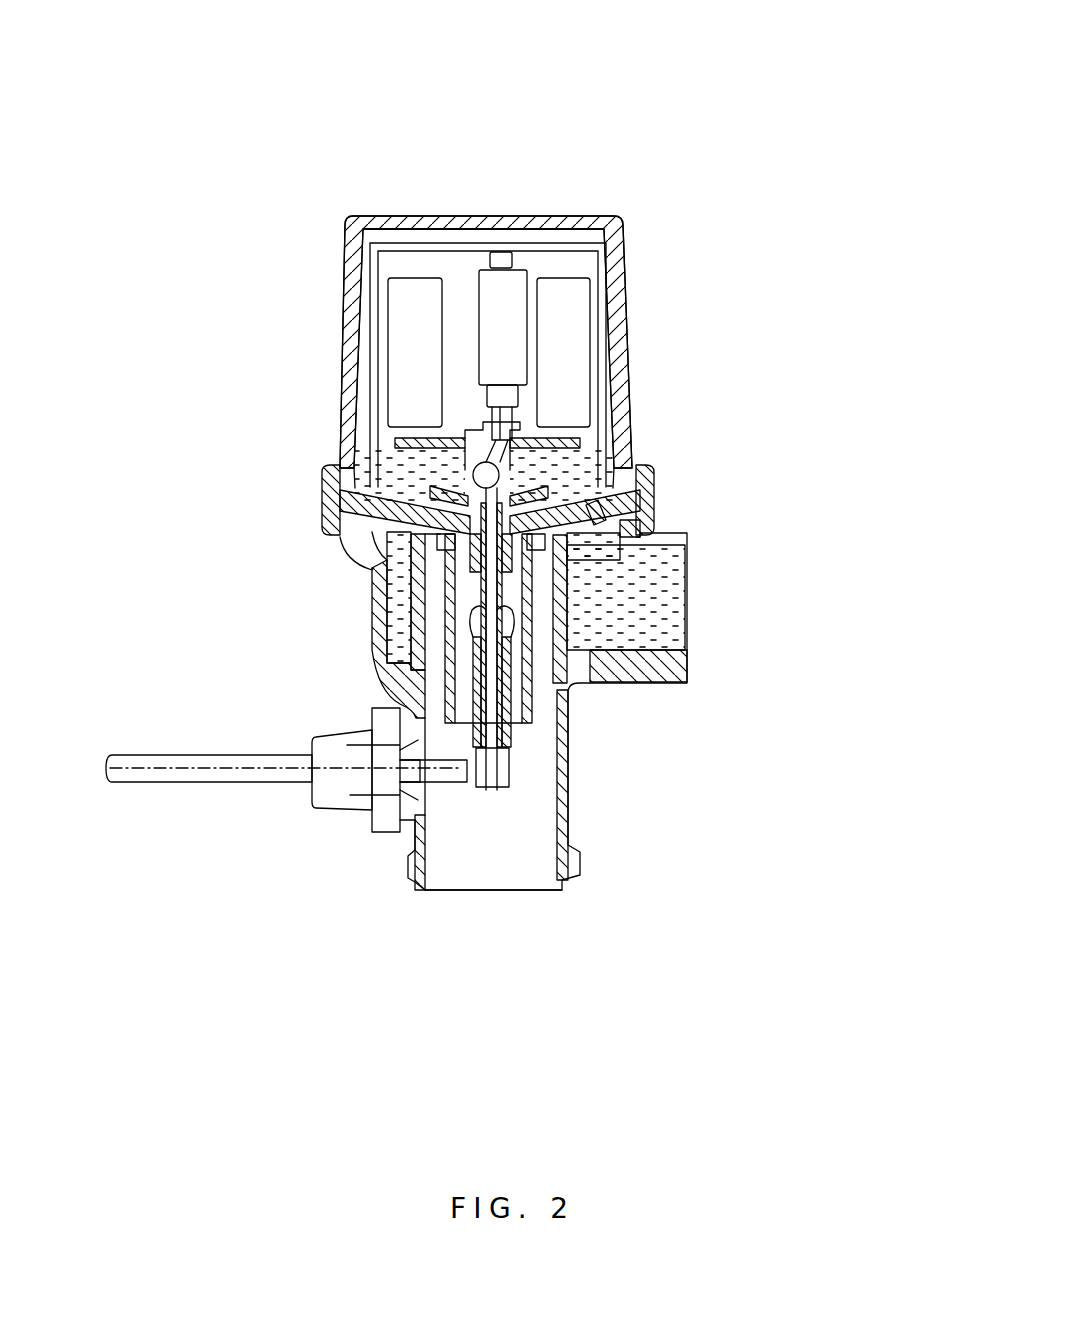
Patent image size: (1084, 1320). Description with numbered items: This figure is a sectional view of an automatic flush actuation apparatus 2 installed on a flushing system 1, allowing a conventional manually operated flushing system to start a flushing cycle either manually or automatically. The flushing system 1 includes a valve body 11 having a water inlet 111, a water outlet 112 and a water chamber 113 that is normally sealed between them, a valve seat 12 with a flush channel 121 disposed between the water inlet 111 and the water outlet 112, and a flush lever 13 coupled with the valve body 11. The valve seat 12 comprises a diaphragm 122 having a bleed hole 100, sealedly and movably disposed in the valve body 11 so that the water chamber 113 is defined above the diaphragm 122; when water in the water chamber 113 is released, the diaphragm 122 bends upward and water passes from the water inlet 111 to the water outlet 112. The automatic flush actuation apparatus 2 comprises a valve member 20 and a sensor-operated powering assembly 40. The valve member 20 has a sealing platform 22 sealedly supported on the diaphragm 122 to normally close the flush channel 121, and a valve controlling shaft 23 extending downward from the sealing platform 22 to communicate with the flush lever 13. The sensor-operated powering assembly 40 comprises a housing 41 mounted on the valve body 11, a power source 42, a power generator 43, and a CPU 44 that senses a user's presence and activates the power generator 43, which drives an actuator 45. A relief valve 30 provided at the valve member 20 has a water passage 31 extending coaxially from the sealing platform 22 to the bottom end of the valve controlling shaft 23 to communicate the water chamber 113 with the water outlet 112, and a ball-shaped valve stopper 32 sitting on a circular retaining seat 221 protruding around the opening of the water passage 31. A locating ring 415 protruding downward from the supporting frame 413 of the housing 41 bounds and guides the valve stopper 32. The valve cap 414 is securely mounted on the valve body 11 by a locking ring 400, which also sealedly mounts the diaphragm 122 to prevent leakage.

The flushing system 1 is at (125, 500).
The automatic flush actuation apparatus 2 is at (858, 92).
The valve body 11 is at (385, 675).
The valve seat 12 is at (215, 632).
The flush lever 13 is at (225, 770).
The valve member 20 is at (817, 507).
The sealing platform 22 is at (550, 492).
The valve controlling shaft 23 is at (560, 572).
The relief valve 30 is at (215, 337).
The water passage 31 is at (492, 693).
The valve stopper 32 is at (486, 462).
The sensor-operated powering assembly 40 is at (737, 163).
The housing 41 is at (390, 123).
The power source 42 is at (415, 320).
The power generator 43 is at (515, 290).
The CPU 44 is at (572, 325).
The actuator 45 is at (577, 470).
The bleed hole 100 is at (620, 538).
The water inlet 111 is at (635, 608).
The water outlet 112 is at (473, 865).
The water chamber 113 is at (417, 457).
The flush channel 121 is at (437, 597).
The diaphragm 122 is at (387, 508).
The retaining seat 221 is at (560, 482).
The locking ring 400 is at (653, 487).
The supporting frame 413 is at (450, 243).
The valve cap 414 is at (380, 215).
The locating ring 415 is at (335, 485).